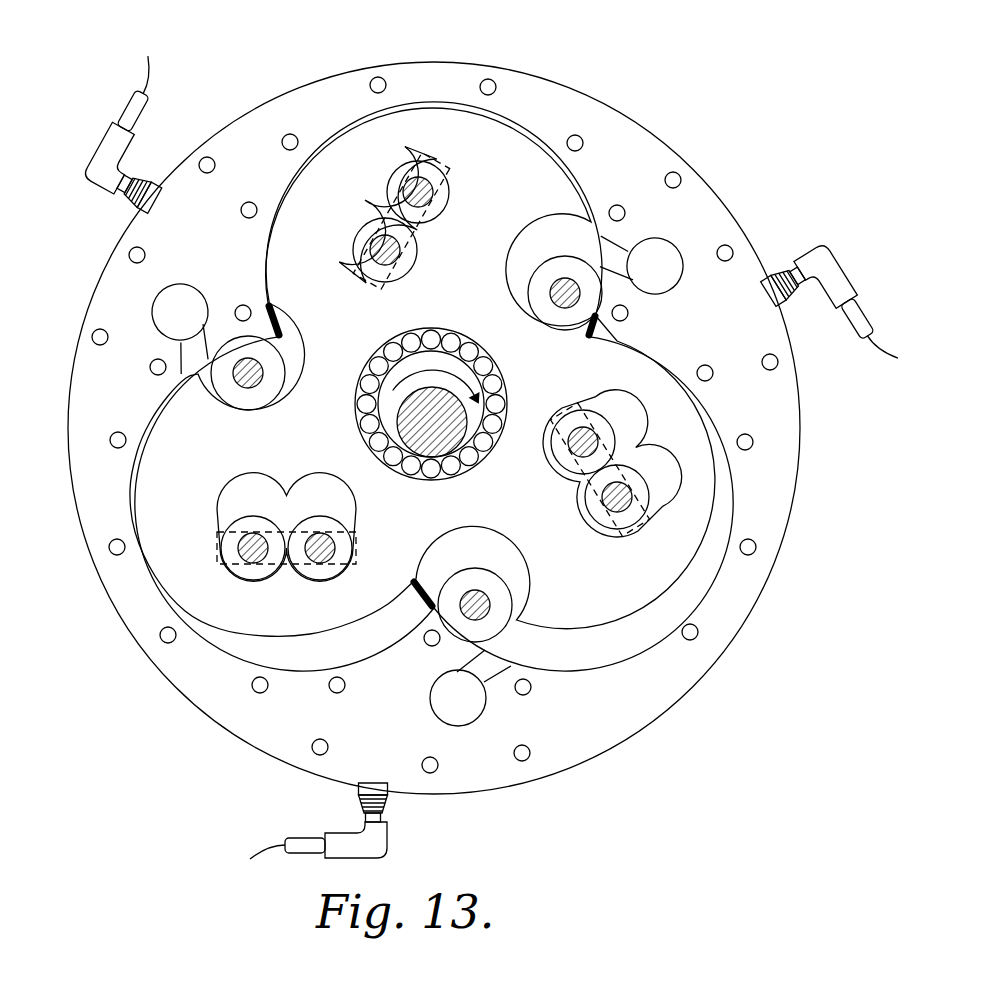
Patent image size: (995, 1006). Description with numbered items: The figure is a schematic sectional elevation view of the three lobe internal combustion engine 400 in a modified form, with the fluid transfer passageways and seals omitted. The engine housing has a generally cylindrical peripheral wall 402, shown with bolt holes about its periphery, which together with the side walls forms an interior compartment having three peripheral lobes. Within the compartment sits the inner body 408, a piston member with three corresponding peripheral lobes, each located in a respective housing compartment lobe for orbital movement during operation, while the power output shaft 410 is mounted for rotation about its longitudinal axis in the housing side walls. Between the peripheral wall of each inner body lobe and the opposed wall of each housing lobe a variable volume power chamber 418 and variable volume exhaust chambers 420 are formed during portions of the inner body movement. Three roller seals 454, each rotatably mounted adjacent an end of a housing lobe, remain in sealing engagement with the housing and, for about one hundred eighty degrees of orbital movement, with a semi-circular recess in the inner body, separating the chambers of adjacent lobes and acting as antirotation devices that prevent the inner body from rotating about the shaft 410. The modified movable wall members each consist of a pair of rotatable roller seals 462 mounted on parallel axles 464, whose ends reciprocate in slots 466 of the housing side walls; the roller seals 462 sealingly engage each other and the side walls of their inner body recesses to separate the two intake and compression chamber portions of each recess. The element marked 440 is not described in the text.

The three lobe engine 400 is at (788, 518).
The peripheral wall 402 is at (622, 128).
The inner body 408 is at (497, 133).
The power output shaft 410 is at (450, 445).
The power chamber 418 is at (277, 215).
The exhaust chamber 420 is at (590, 222).
The connector boss 440 is at (190, 290).
The roller seal 454 is at (601, 292).
The rotatable roller seal 462 is at (442, 185).
The axle 464 is at (420, 193).
The slot 466 is at (360, 310).